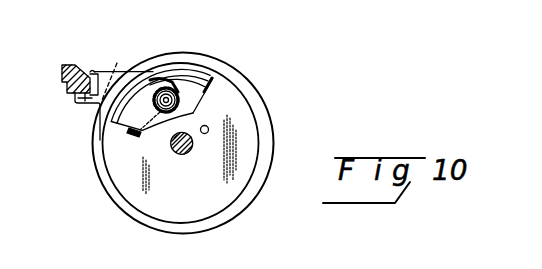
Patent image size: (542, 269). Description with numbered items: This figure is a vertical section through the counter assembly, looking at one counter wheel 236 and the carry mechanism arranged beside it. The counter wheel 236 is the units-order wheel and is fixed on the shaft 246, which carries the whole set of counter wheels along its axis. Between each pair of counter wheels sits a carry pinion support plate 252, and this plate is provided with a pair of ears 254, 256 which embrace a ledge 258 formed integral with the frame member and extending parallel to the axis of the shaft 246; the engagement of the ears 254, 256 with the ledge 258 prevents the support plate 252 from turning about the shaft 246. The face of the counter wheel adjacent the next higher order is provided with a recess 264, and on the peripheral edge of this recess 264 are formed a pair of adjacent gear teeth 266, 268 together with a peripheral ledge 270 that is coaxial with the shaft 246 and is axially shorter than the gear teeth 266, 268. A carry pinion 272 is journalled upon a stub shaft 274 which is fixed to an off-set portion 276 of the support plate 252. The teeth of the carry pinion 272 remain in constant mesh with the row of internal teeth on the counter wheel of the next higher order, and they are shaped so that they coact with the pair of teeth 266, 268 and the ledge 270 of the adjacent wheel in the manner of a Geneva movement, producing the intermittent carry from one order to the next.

The counter wheel 236 is at (273, 119).
The carry pinion support plate 252 is at (260, 135).
The off-set portion 276 is at (217, 83).
The peripheral ledge 270 is at (203, 82).
The gear tooth 266 is at (182, 85).
The recess 264 is at (162, 133).
The gear tooth 268 is at (158, 82).
The stub shaft 274 is at (174, 101).
The carry pinion 272 is at (134, 126).
The shaft 246 is at (182, 157).
The ear 254 is at (91, 70).
The ear 256 is at (90, 110).
The ledge 258 is at (77, 105).